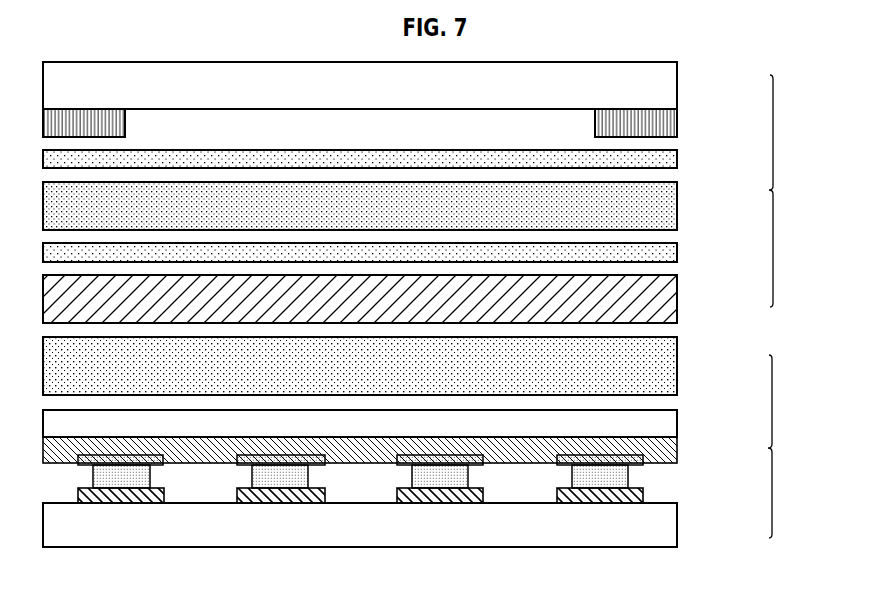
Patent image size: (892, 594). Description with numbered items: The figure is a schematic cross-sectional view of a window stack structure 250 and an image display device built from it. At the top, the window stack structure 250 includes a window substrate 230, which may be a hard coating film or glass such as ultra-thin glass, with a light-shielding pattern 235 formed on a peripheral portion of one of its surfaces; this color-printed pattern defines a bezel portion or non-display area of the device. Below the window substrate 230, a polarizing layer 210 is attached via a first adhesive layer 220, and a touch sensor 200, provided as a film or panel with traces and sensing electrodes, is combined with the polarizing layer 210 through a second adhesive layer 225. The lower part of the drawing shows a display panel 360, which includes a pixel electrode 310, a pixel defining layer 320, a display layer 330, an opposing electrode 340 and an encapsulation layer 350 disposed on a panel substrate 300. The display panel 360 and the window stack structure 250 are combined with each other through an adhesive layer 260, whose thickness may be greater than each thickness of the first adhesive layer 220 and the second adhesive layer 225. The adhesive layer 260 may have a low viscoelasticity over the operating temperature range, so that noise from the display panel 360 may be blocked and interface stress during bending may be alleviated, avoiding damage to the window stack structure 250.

The touch sensor 200 is at (670, 294).
The polarizing layer 210 is at (670, 204).
The first adhesive layer 220 is at (670, 156).
The second adhesive layer 225 is at (670, 253).
The window substrate 230 is at (670, 83).
The light-shielding pattern 235 is at (672, 121).
The window stack structure 250 is at (799, 191).
The adhesive layer 260 is at (670, 364).
The panel substrate 300 is at (670, 527).
The pixel electrode 310 is at (647, 491).
The pixel defining layer 320 is at (672, 476).
The display layer 330 is at (660, 458).
The opposing electrode 340 is at (670, 448).
The encapsulation layer 350 is at (670, 425).
The display panel 360 is at (436, 451).